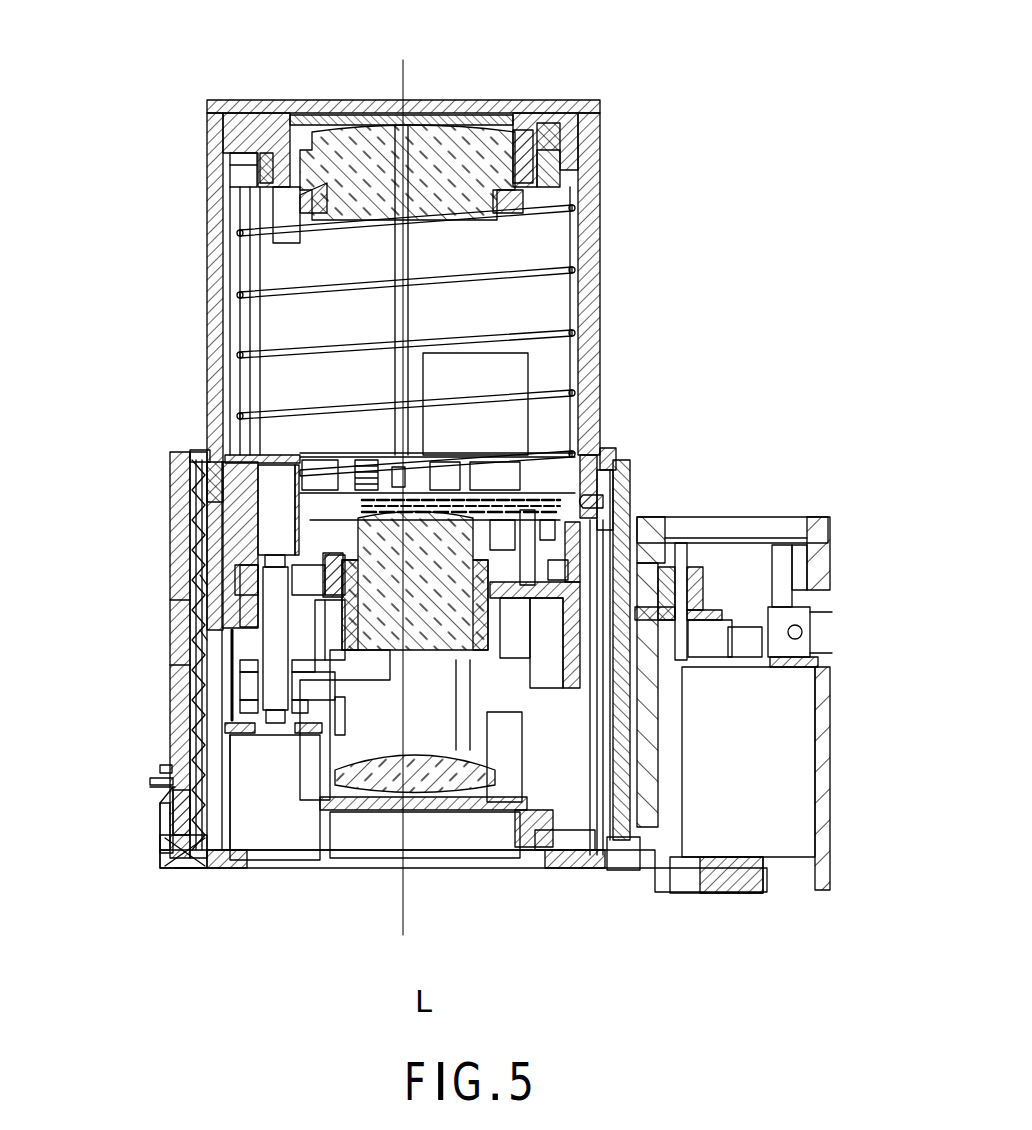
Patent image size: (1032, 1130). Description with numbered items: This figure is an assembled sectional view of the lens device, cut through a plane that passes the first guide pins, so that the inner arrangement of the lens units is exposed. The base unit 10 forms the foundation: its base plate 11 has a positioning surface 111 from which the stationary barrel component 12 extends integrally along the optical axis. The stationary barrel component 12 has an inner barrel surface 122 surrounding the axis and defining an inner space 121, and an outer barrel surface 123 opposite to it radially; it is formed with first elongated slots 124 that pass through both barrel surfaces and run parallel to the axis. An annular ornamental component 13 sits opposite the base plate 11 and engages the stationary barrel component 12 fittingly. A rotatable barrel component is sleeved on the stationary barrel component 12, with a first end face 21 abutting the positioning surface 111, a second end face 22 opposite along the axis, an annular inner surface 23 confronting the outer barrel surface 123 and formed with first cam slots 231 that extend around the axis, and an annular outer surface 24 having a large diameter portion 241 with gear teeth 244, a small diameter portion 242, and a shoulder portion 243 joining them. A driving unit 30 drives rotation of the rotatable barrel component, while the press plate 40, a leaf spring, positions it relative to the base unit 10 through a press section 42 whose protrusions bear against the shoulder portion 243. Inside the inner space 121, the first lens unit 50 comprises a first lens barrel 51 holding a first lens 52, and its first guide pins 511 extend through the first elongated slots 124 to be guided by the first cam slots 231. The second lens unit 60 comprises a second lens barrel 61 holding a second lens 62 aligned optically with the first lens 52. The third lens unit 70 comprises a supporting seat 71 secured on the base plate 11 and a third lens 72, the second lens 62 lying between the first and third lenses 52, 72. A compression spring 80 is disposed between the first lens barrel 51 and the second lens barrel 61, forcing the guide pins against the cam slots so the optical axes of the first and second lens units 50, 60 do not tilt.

The base unit 10 is at (215, 872).
The base plate 11 is at (190, 870).
The positioning surface 111 is at (178, 872).
The stationary barrel component 12 is at (190, 548).
The inner space 121 is at (575, 760).
The inner barrel surface 122 is at (206, 638).
The outer barrel surface 123 is at (203, 580).
The first elongated slots 124 is at (680, 535).
The annular ornamental component 13 is at (606, 448).
The first end face 21 is at (185, 840).
The second end face 22 is at (622, 466).
The annular inner surface 23 is at (188, 668).
The first cam slots 231 is at (628, 506).
The annular outer surface 24 is at (180, 602).
The large diameter portion 241 is at (160, 797).
The small diameter portion 242 is at (190, 458).
The shoulder portion 243 is at (165, 783).
The gear teeth 244 is at (170, 820).
The driving unit 30 is at (785, 727).
The press plate 40 is at (148, 768).
The press section 42 is at (165, 770).
The first lens unit 50 is at (601, 100).
The first lens barrel 51 is at (601, 148).
The first guide pins 511 is at (610, 495).
The first lens 52 is at (470, 122).
The second lens unit 60 is at (280, 455).
The second lens barrel 61 is at (222, 532).
The second lens 62 is at (210, 496).
The third lens unit 70 is at (390, 812).
The supporting seat 71 is at (512, 728).
The third lens 72 is at (440, 790).
The spring 80 is at (272, 345).